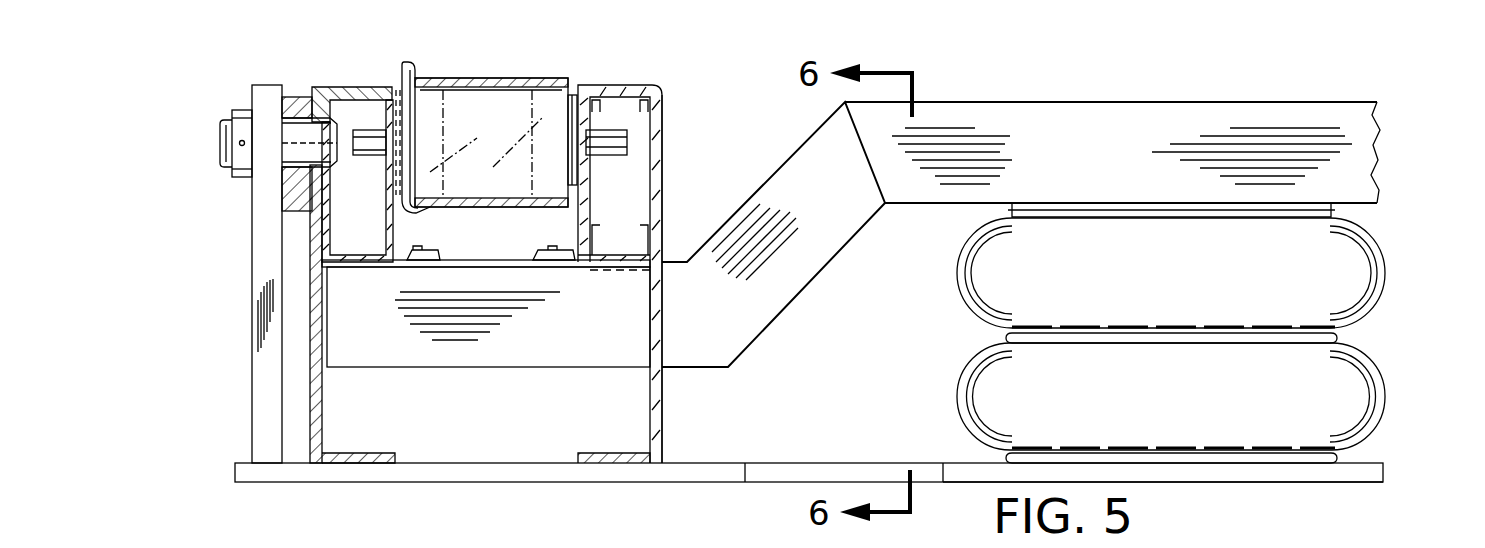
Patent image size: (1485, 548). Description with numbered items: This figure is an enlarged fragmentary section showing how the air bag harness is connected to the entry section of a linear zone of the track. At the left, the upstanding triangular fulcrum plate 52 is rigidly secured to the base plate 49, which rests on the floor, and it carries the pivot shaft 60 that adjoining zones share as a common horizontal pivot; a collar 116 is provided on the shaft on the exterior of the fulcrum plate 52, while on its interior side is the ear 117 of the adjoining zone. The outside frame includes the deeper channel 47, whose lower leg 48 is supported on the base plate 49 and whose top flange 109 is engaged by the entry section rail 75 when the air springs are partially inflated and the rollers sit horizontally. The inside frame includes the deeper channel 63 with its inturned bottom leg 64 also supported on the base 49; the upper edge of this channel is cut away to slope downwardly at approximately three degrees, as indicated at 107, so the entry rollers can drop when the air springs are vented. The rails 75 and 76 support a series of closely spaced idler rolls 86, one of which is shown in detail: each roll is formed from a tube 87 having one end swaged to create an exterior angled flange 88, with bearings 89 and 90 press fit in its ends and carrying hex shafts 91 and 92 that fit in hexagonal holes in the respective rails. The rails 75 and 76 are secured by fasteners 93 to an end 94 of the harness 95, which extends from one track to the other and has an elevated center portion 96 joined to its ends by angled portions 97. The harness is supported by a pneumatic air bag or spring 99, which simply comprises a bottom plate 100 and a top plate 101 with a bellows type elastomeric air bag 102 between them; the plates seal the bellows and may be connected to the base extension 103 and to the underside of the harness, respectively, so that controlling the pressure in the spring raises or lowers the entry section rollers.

The channel 47 is at (311, 398).
The lower leg 48 is at (352, 453).
The base plate 49 is at (456, 483).
The upstanding triangular fulcrum plate 52 is at (252, 312).
The pivot shaft 60 is at (222, 137).
The deeper channel 63 is at (663, 395).
The inturned bottom leg 64 is at (618, 453).
The entry section rail 75 is at (383, 222).
The entry section rail 76 is at (588, 213).
The idler roll 86 is at (530, 68).
The tube 87 is at (502, 60).
The exterior angled flange 88 is at (412, 70).
The bearing 89 is at (463, 152).
The bearing 90 is at (503, 170).
The hex shaft 91 is at (372, 158).
The hex shaft 92 is at (617, 157).
The fastener 93 is at (422, 252).
The end of harness 94 is at (520, 355).
The harness 95 is at (1205, 102).
The elevated center portion 96 is at (1365, 162).
The angled portion 97 is at (770, 302).
The pneumatic air bag or spring 99 is at (1392, 277).
The bottom plate 100 is at (1205, 462).
The top plate 101 is at (1222, 205).
The bellows type elastomeric air bag 102 is at (1388, 365).
The base extension 103 is at (1340, 473).
The cut away section 107 is at (656, 152).
The top flange 109 is at (356, 87).
The collar 116 is at (245, 112).
The ear 117 is at (300, 98).